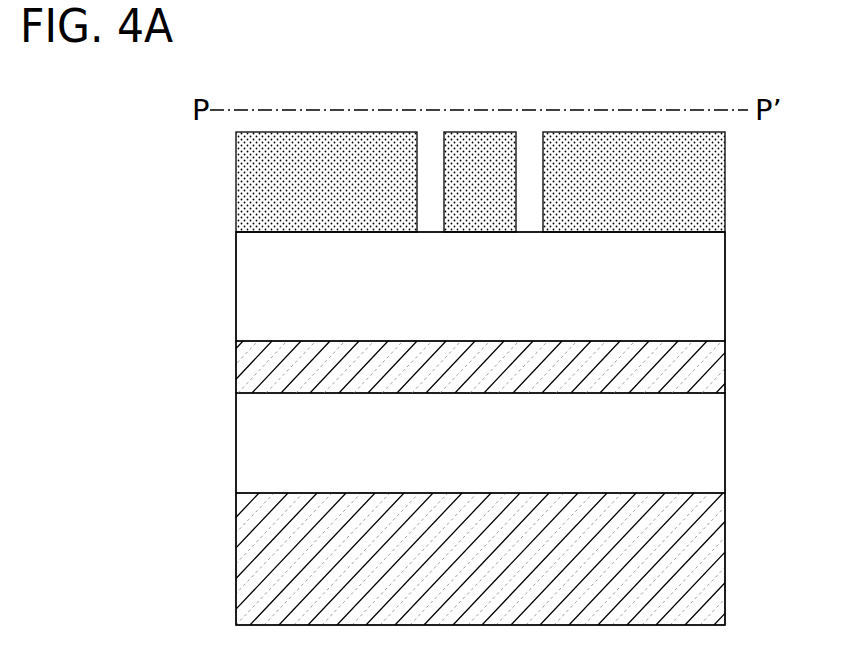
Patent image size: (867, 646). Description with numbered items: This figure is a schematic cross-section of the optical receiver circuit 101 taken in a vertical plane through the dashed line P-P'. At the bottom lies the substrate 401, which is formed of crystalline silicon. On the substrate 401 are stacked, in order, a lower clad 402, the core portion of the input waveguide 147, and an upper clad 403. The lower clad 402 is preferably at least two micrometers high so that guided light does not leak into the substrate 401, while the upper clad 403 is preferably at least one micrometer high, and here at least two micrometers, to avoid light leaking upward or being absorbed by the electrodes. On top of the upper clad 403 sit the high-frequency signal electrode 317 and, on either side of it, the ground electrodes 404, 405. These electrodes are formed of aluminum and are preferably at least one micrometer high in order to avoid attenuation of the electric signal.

The optical receiver circuit 101 is at (235, 264).
The substrate 401 is at (502, 578).
The lower clad 402 is at (502, 461).
The input waveguide 147 is at (502, 383).
The upper clad 403 is at (502, 303).
The ground electrode 404 is at (347, 197).
The high-frequency signal electrode 317 is at (502, 197).
The ground electrode 405 is at (657, 197).